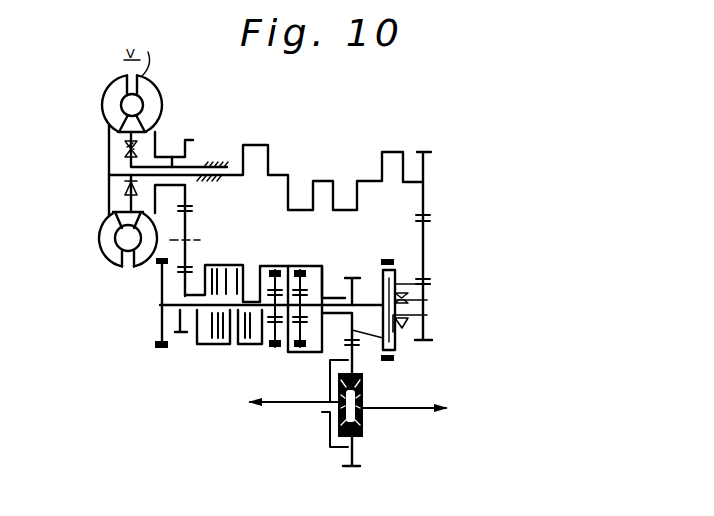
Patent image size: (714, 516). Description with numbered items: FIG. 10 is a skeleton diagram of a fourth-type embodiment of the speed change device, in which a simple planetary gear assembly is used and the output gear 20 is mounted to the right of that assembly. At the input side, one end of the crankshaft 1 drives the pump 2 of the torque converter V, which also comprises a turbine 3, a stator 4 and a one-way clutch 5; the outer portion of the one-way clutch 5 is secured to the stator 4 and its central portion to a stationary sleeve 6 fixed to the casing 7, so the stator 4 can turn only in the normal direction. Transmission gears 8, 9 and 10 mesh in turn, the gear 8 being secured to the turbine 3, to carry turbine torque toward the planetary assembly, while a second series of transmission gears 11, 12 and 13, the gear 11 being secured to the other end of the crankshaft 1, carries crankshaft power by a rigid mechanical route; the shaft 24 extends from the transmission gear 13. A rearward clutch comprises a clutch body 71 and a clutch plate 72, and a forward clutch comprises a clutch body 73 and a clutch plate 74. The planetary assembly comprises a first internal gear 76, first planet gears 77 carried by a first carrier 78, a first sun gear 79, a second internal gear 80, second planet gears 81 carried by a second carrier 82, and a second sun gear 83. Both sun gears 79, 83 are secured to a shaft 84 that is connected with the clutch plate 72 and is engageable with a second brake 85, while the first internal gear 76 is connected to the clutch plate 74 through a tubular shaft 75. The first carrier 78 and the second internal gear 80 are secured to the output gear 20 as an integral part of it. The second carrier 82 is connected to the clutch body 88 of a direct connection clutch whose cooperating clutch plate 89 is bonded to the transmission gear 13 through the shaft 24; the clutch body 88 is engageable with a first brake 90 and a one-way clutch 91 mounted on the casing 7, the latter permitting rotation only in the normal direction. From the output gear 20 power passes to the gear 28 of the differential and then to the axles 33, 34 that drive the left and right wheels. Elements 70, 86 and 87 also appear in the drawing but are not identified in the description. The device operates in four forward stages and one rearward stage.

The crankshaft 1 is at (236, 173).
The pump 2 is at (112, 96).
The turbine 3 is at (151, 94).
The stator 4 is at (113, 132).
The one-way clutch 5 is at (125, 148).
The stationary sleeve 6 is at (172, 157).
The casing 7 is at (213, 163).
The transmission gear 8 is at (192, 140).
The transmission gear 9 is at (185, 230).
The transmission gear 10 is at (163, 288).
The transmission gear 11 is at (428, 198).
The transmission gear 12 is at (402, 276).
The transmission gear 13 is at (427, 301).
The output gear 20 is at (394, 348).
The transmission shaft 24 is at (427, 316).
The gear 28 is at (355, 458).
The axle 33 is at (298, 404).
The axle 34 is at (407, 410).
The gear 70 is at (198, 332).
The clutch body 71 is at (212, 340).
The clutch plate 72 is at (228, 343).
The clutch body 73 is at (247, 341).
The clutch plate 74 is at (243, 346).
The tubular shaft 75 is at (251, 268).
The first internal gear 76 is at (258, 265).
The first planet gears 77 is at (278, 272).
The first carrier 78 is at (286, 351).
The first sun gear 79 is at (283, 348).
The second internal gear 80 is at (302, 270).
The second planet gears 81 is at (297, 278).
The second carrier 82 is at (320, 272).
The second sun gear 83 is at (318, 283).
The shaft 84 is at (161, 306).
The second brake 85 is at (157, 345).
The shaft 86 is at (345, 292).
The support 87 is at (360, 276).
The clutch body 88 is at (410, 248).
The clutch plate 89 is at (430, 284).
The first brake 90 is at (388, 362).
The one-way clutch 91 is at (429, 338).